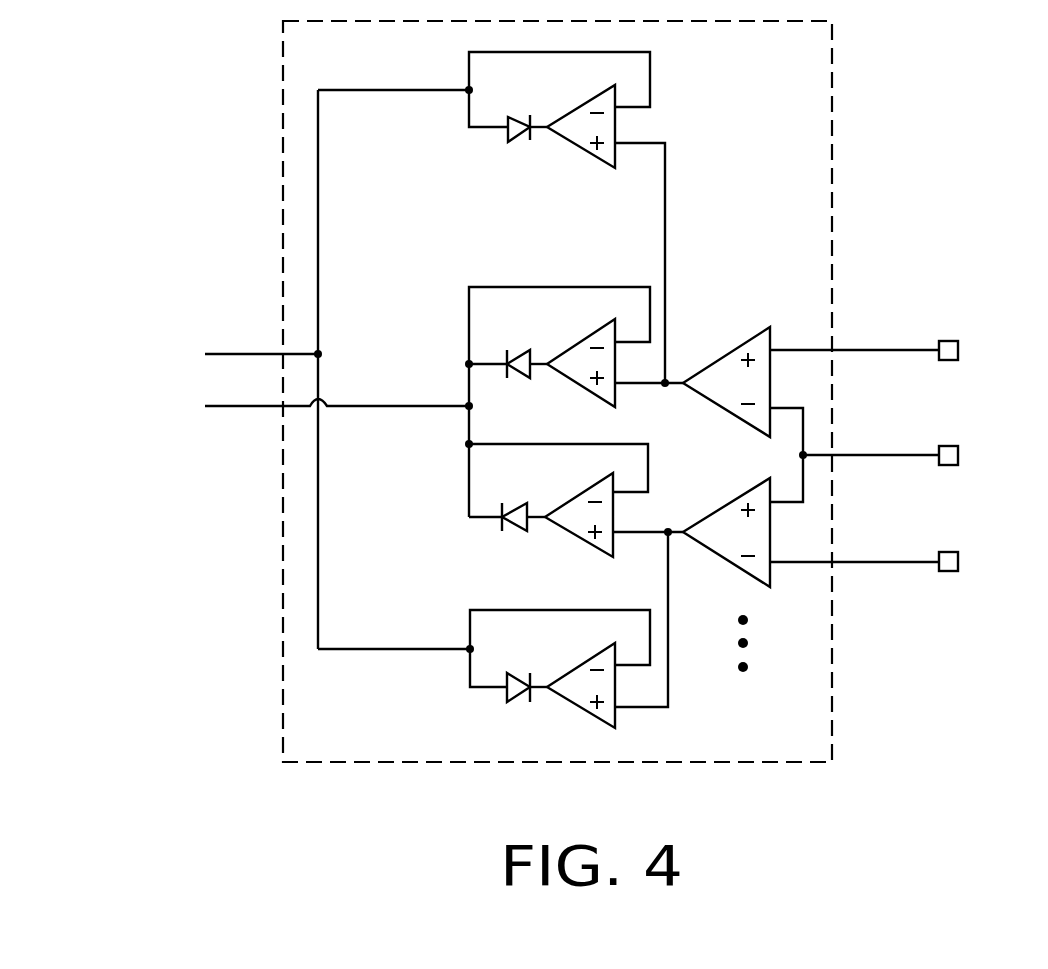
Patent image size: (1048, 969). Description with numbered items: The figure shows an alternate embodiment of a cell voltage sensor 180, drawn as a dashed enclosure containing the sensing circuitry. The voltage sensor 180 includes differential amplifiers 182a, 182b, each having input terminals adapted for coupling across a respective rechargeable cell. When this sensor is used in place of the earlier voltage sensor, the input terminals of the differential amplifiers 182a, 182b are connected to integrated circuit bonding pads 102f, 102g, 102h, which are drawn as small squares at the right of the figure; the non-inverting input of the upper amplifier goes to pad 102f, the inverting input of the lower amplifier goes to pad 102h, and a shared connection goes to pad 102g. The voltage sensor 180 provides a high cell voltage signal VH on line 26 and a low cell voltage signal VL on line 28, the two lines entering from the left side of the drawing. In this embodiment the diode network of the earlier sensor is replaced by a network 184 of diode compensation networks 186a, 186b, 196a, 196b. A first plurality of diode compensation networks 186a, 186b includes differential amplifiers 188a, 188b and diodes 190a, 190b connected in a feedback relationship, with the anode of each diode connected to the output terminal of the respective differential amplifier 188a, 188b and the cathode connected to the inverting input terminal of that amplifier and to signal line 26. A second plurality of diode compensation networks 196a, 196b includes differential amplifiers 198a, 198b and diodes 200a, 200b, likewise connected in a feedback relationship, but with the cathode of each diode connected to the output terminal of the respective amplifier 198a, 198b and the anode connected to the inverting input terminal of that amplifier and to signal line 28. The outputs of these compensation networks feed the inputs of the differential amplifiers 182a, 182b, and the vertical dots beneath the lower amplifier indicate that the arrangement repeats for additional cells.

The cell voltage sensor 180 is at (832, 117).
The network of diode compensation networks 184 is at (411, 279).
The signal line 28 is at (257, 352).
The signal line 26 is at (258, 408).
The diode compensation network 196a is at (538, 148).
The diode compensation network 196b is at (545, 708).
The differential amplifier 198a is at (582, 105).
The differential amplifier 198b is at (595, 653).
The diode 200a is at (505, 118).
The diode 200b is at (507, 678).
The diode compensation network 186a is at (562, 333).
The diode compensation network 186b is at (548, 543).
The differential amplifier 188a is at (588, 393).
The differential amplifier 188b is at (595, 483).
The diode 190a is at (533, 374).
The diode 190b is at (515, 507).
The differential amplifier 182a is at (730, 349).
The differential amplifier 182b is at (757, 485).
The integrated circuit bonding pad 102f is at (953, 342).
The integrated circuit bonding pad 102g is at (953, 447).
The integrated circuit bonding pad 102h is at (953, 552).